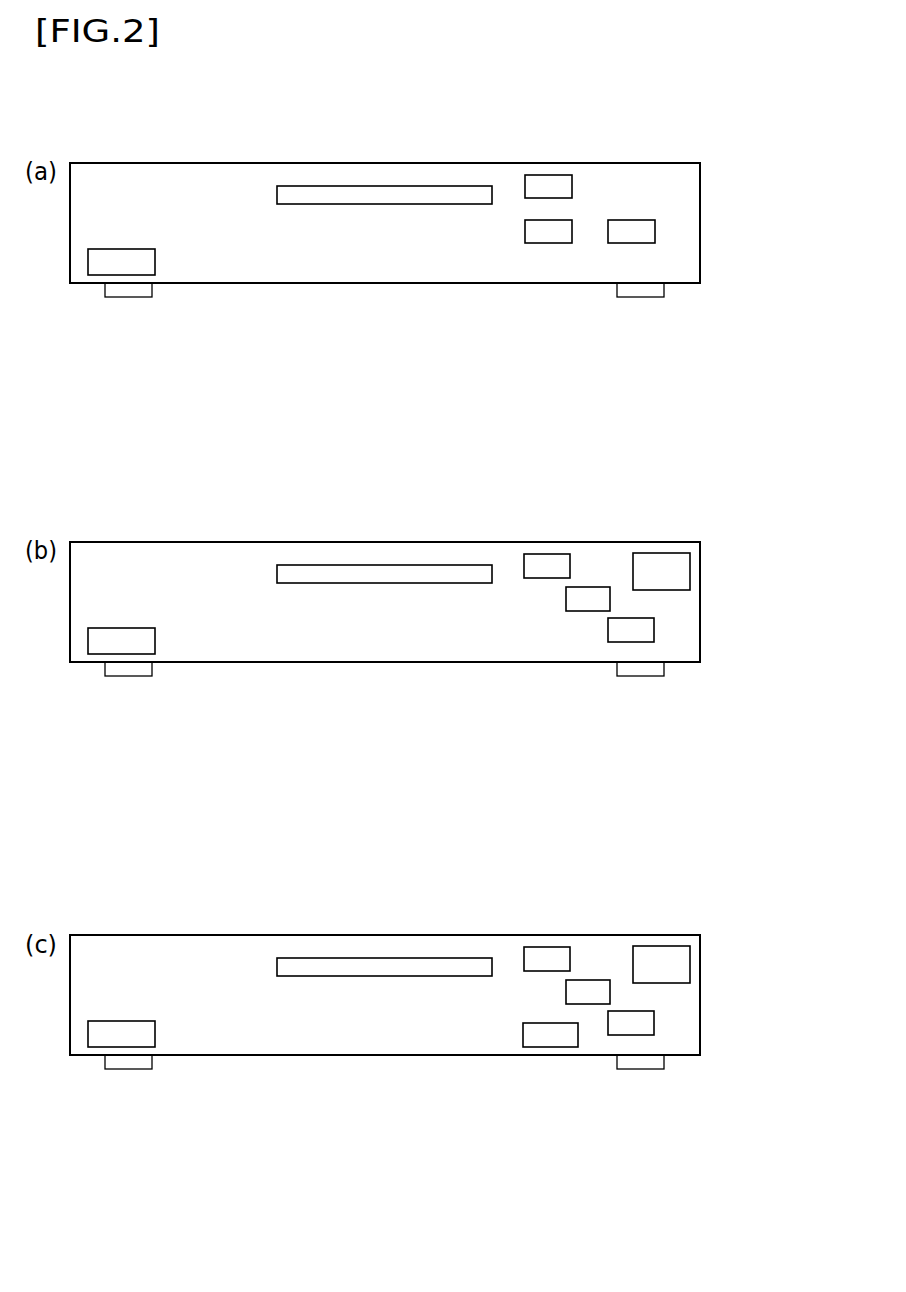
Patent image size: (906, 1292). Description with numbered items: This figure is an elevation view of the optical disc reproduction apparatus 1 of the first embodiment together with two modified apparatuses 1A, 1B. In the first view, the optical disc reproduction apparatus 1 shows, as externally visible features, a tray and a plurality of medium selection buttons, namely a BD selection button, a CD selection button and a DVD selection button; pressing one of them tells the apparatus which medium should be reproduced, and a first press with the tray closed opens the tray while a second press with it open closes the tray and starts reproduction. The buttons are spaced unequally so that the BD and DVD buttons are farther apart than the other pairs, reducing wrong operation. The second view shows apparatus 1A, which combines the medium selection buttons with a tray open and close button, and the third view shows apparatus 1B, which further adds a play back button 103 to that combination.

The optical disc reproduction apparatus 1 is at (733, 176).
The disc player (variation A) 1A is at (733, 555).
The disc player (variation B) 1B is at (733, 948).
The play back button 103 is at (550, 1047).